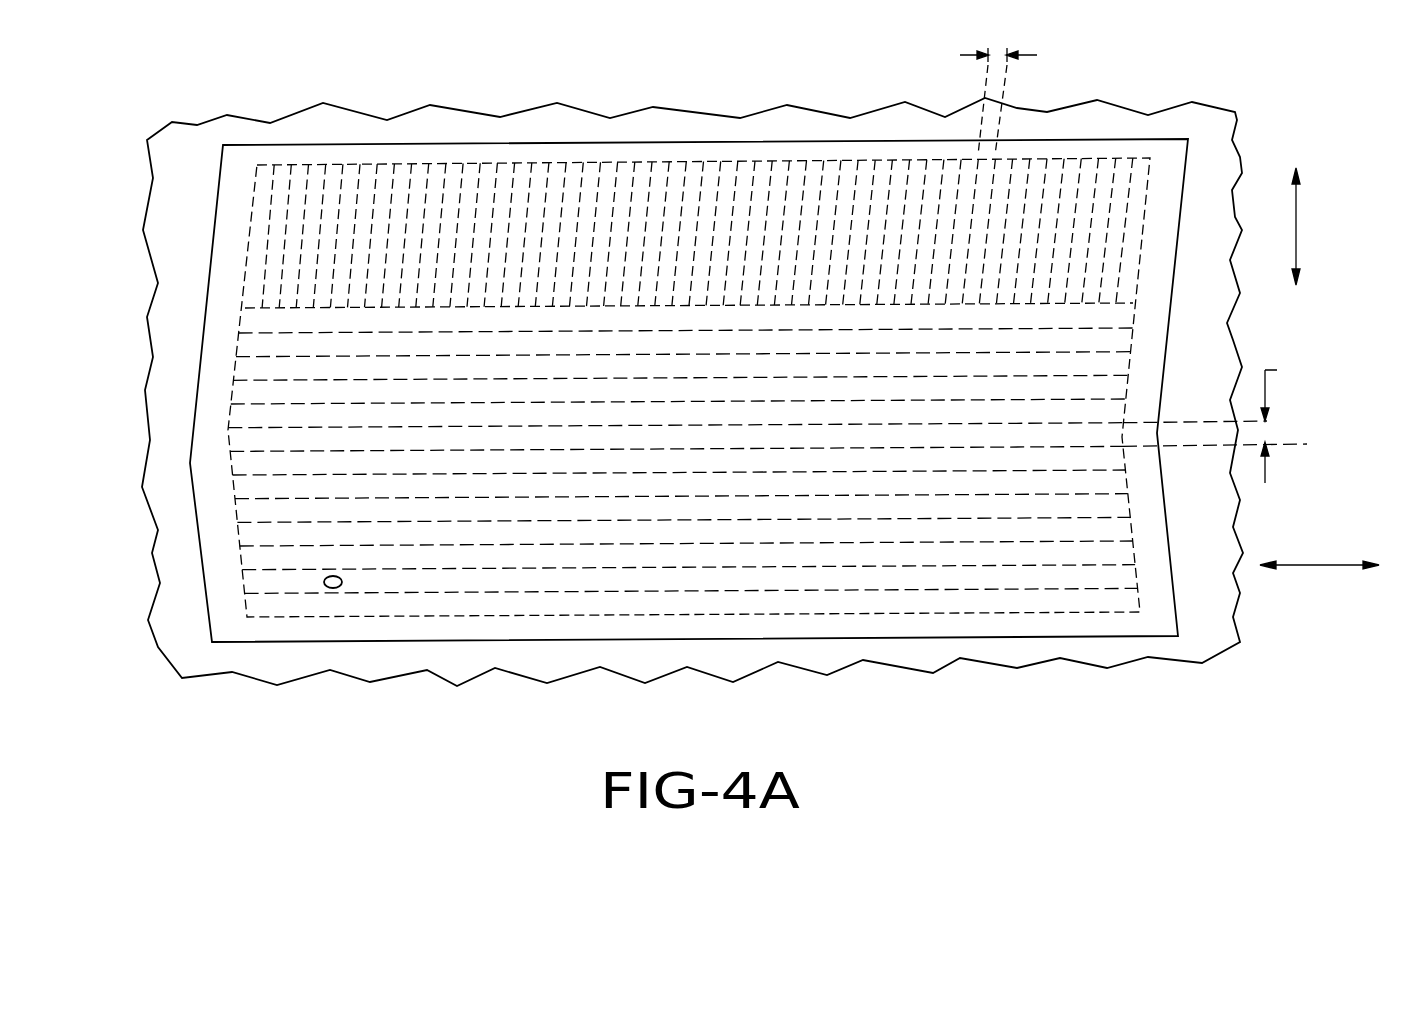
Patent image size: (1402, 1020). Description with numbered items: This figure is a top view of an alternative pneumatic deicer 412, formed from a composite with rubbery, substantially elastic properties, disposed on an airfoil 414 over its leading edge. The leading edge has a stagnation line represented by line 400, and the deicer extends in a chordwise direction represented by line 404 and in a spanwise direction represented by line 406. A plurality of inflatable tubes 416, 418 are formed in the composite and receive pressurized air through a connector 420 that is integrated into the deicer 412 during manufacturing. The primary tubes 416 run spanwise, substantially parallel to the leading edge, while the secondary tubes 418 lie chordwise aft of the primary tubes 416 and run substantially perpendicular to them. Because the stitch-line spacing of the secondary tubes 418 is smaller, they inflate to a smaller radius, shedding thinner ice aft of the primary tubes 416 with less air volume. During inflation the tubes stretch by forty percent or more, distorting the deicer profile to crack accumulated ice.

The stagnation line 400 is at (1292, 442).
The chordwise direction line 404 is at (1297, 238).
The spanwise direction line 406 is at (1317, 565).
The pneumatic deicer 412 is at (1004, 636).
The airfoil 414 is at (530, 660).
The primary inflation tubes 416 is at (262, 348).
The secondary inflation tubes 418 is at (293, 183).
The connector 420 is at (333, 588).